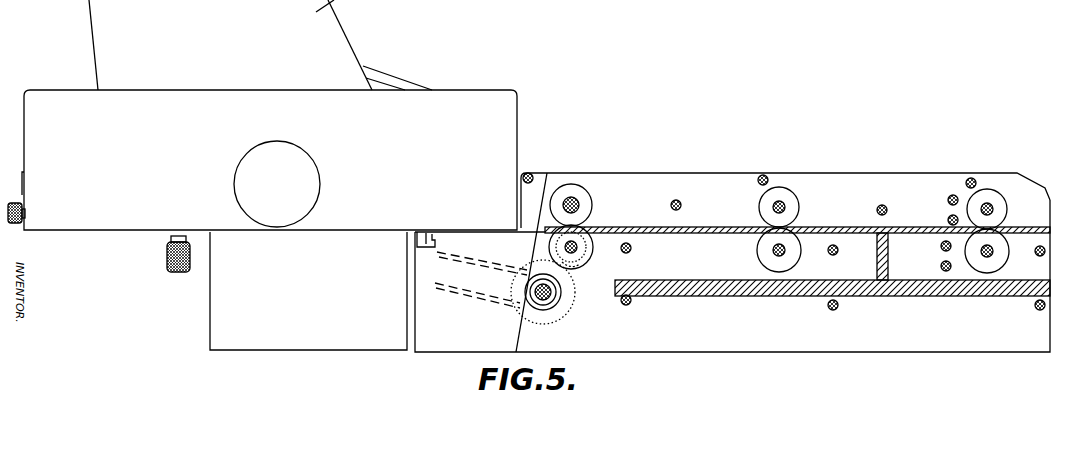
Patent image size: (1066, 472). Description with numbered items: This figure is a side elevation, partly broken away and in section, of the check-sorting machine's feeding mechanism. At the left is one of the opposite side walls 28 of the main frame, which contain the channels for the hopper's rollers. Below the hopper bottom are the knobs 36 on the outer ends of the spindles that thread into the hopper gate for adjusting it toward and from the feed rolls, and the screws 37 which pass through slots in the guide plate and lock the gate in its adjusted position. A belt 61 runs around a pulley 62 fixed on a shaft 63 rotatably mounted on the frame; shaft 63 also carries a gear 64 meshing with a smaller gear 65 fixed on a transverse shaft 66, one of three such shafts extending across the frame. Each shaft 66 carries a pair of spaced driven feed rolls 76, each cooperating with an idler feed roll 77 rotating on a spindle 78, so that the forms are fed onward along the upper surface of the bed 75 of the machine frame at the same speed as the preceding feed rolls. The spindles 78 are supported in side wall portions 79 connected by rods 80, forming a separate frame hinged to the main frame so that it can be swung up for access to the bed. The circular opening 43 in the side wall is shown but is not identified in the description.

The housing 28 is at (497, 138).
The knurled knob 36 is at (17, 223).
The knurled knob 37 is at (167, 262).
The opening 43 is at (311, 185).
The guide lines 61 is at (497, 266).
The shaft 62 is at (552, 305).
The hub 63 is at (561, 293).
The gear 64 is at (556, 325).
The gear teeth 65 is at (590, 262).
The pinion gear 66 is at (580, 246).
The guide strip 75 is at (726, 233).
The roller 76 is at (547, 246).
The roller 77 is at (590, 198).
The roller shaft 78 is at (578, 207).
The plate 79 is at (857, 181).
The screw 80 is at (681, 207).